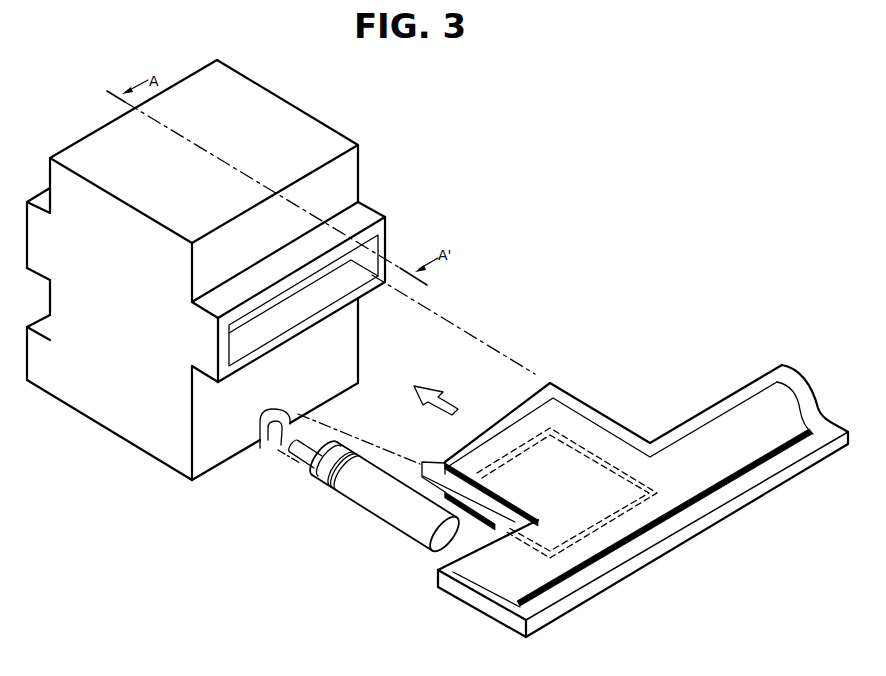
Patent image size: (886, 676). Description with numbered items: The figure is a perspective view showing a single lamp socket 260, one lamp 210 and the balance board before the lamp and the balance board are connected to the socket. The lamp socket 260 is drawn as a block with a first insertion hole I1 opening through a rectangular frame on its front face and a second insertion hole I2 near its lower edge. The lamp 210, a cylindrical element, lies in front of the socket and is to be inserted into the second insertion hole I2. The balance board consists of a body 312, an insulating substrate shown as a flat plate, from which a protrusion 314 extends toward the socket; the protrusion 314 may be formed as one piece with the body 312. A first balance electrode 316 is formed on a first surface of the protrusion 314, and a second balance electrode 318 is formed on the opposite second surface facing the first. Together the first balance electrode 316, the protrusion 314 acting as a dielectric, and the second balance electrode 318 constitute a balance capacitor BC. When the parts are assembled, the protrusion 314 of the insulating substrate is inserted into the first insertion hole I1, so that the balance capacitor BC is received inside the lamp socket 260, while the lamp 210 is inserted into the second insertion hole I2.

The lamp socket 260 is at (233, 273).
The lamp 210 is at (403, 508).
The body 312 is at (678, 533).
The protrusion 314 is at (443, 472).
The first balance electrode 316 is at (441, 460).
The second balance electrode 318 is at (445, 490).
The balance capacitor BC is at (451, 480).
The first insertion hole I1 is at (322, 299).
The second insertion hole I2 is at (265, 450).